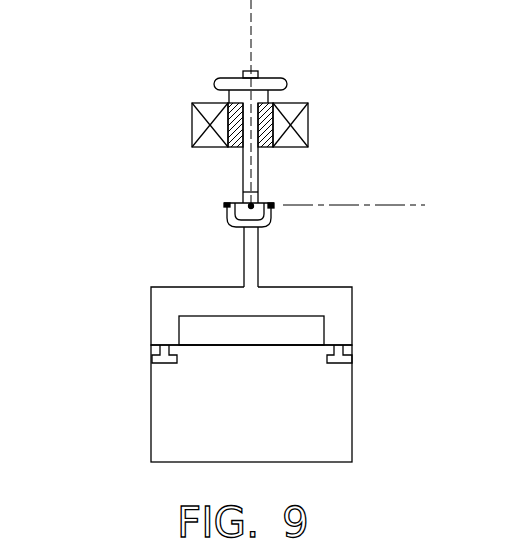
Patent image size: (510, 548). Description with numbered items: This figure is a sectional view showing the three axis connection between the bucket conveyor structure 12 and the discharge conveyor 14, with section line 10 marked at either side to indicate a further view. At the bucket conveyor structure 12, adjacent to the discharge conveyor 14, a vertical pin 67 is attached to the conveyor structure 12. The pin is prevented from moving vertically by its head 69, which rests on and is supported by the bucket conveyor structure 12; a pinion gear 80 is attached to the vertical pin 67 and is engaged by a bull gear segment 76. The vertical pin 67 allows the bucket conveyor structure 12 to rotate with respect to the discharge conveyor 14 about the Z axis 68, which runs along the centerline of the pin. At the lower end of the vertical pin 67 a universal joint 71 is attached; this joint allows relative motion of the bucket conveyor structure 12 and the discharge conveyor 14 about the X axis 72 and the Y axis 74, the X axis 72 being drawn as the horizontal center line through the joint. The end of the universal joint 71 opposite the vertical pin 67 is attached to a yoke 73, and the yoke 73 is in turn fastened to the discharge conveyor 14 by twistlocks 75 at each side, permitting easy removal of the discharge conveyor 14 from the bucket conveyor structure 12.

The section line 10— 10 is at (250, 86).
The bucket conveyor structure 12 is at (209, 126).
The discharge conveyor 14 is at (309, 403).
The vertical pin 67 is at (198, 153).
The Z axis 68 is at (252, 30).
The head 69 is at (268, 103).
The universal joint 71 is at (308, 190).
The X axis 72 is at (374, 186).
The yoke 73 is at (273, 286).
The Y axis 74 is at (213, 230).
The twistlocks 75 is at (270, 369).
The bull gear segment 76 is at (436, 545).
The pinion gear 80 is at (212, 61).